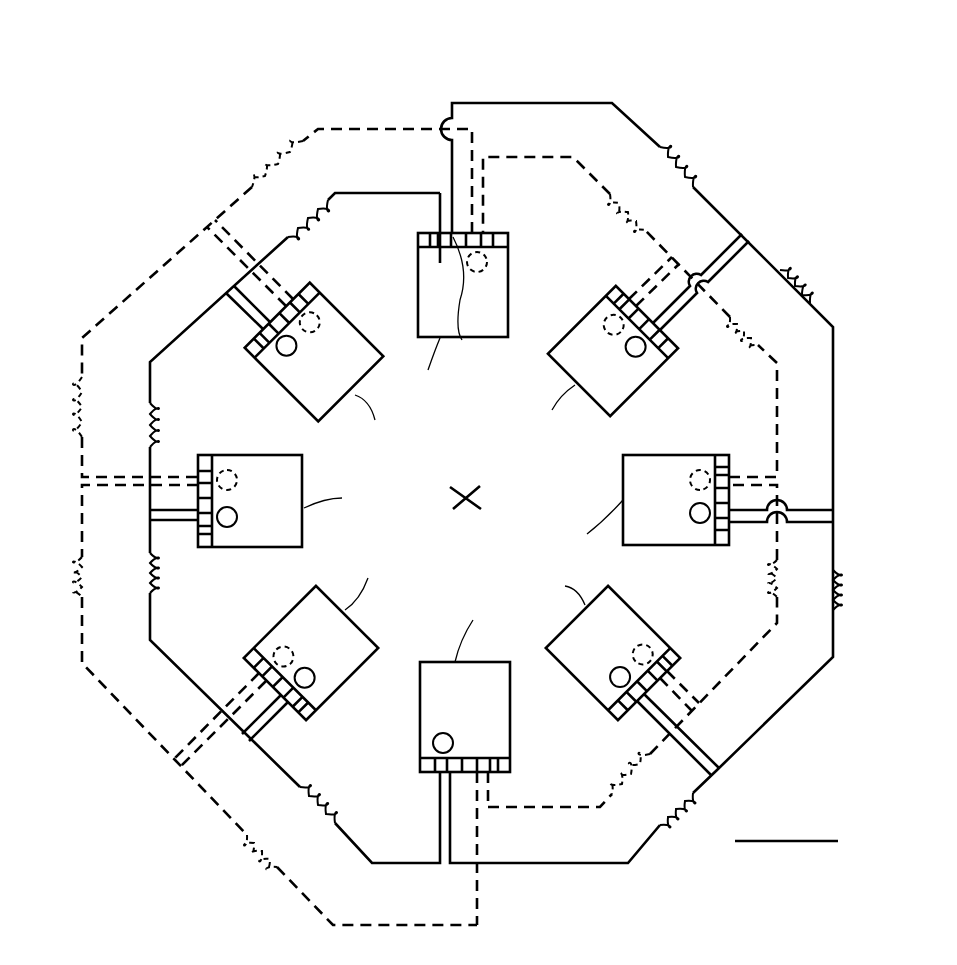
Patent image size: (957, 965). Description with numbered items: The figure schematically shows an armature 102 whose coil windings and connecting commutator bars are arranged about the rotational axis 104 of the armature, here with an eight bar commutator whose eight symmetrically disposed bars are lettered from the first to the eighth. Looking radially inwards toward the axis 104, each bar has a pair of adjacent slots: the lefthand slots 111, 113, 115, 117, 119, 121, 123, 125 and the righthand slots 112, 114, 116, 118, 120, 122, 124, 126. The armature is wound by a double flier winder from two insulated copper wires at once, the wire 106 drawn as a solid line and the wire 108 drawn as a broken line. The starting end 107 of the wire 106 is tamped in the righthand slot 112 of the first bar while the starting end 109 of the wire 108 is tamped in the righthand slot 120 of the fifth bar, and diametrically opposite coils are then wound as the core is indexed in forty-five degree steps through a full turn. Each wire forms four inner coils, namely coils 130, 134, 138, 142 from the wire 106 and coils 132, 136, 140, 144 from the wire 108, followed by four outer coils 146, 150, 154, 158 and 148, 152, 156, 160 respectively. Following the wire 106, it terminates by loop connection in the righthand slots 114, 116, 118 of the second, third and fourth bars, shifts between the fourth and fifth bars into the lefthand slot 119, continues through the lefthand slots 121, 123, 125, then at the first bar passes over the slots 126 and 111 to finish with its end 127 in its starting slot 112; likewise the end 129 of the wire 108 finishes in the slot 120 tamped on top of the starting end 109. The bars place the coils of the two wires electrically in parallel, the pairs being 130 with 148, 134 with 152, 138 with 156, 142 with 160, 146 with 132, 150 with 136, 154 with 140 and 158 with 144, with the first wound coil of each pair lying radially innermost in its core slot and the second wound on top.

The armature 102 is at (662, 66).
The rotational axis 104 is at (482, 495).
The wire 106 is at (412, 192).
The starting end 107 is at (440, 263).
The wire 108 is at (365, 126).
The starting end 109 is at (488, 757).
The lefthand slot 111 is at (490, 232).
The righthand slot 112 is at (418, 245).
The lefthand slot 113 is at (300, 284).
The righthand slot 114 is at (262, 345).
The lefthand slot 115 is at (205, 460).
The righthand slot 116 is at (212, 522).
The lefthand slot 117 is at (255, 677).
The righthand slot 118 is at (293, 717).
The lefthand slot 119 is at (438, 772).
The righthand slot 120 is at (510, 768).
The lefthand slot 121 is at (637, 717).
The righthand slot 122 is at (687, 670).
The lefthand slot 123 is at (735, 543).
The righthand slot 124 is at (728, 470).
The lefthand slot 125 is at (655, 350).
The righthand slot 126 is at (633, 290).
The end 127 is at (462, 340).
The end 129 is at (472, 757).
The inner coil 130 is at (328, 213).
The inner coil 132 is at (640, 797).
The inner coil 134 is at (145, 403).
The inner coil 136 is at (782, 600).
The inner coil 138 is at (145, 583).
The inner coil 140 is at (752, 327).
The inner coil 142 is at (318, 823).
The inner coil 144 is at (627, 185).
The outer coil 146 is at (685, 822).
The outer coil 148 is at (268, 150).
The outer coil 150 is at (838, 598).
The outer coil 152 is at (82, 385).
The outer coil 154 is at (798, 278).
The outer coil 156 is at (75, 597).
The outer coil 158 is at (700, 165).
The outer coil 160 is at (255, 843).